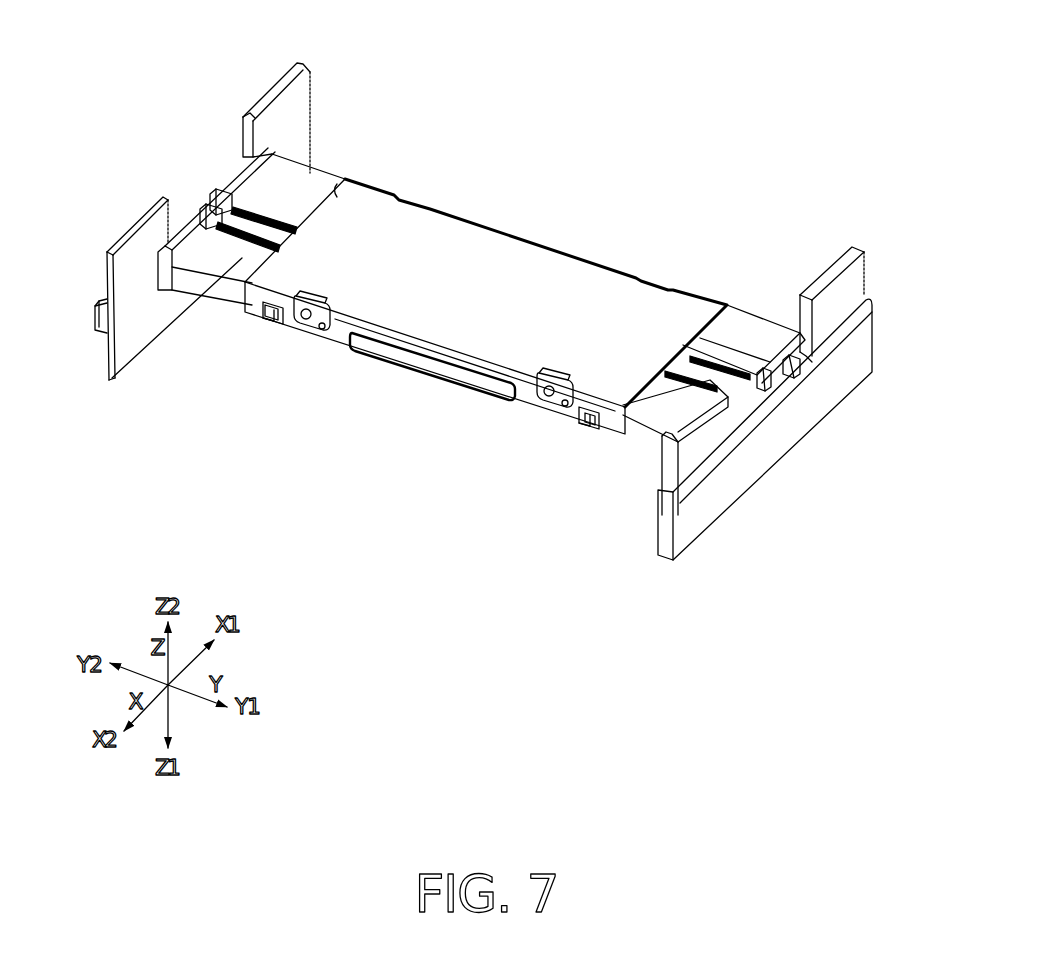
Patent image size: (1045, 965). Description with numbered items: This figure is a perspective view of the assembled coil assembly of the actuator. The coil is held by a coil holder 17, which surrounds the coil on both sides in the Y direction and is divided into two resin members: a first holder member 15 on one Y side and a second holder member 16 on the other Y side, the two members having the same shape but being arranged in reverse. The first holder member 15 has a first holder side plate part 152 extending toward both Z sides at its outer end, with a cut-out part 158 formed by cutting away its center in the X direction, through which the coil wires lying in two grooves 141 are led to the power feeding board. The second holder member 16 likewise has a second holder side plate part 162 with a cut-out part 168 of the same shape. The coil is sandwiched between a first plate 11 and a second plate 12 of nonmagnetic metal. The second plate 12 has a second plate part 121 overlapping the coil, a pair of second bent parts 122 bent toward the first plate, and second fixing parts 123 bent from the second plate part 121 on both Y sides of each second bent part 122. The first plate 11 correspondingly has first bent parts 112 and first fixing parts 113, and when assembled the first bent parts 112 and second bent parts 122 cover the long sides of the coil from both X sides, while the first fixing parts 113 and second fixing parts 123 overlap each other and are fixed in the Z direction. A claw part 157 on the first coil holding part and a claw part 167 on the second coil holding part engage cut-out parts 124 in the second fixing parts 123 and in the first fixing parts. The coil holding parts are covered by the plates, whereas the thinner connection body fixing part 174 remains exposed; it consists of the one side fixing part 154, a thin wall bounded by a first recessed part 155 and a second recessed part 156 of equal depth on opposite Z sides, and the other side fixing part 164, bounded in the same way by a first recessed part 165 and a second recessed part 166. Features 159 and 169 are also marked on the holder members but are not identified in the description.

The first plate 11 is at (488, 332).
The second plate 12 is at (486, 326).
The first bent parts 112 is at (437, 370).
The first fixing parts 113 is at (310, 318).
The second plate part 121 is at (512, 280).
The second bent parts 122 is at (460, 363).
The second fixing parts 123 is at (333, 333).
The cut-out parts 124 is at (278, 321).
The grooves 141 is at (222, 225).
The first holder member 15 is at (761, 427).
The first holder side plate part 152 is at (857, 280).
The one side fixing part 154 is at (753, 333).
The first recessed part 155 is at (733, 322).
The second recessed part 156 is at (635, 435).
The claw part 157 is at (588, 424).
The cut-out part 158 is at (801, 292).
The leg portion 159 is at (872, 310).
The second holder member 16 is at (431, 231).
The second holder side plate part 162 is at (299, 80).
The other side fixing part 164 is at (282, 183).
The first recessed part 165 is at (312, 188).
The second recessed part 166 is at (208, 292).
The claw part 167 is at (263, 317).
The cut-out part 168 is at (245, 127).
The leg portion 169 is at (97, 296).
The coil holder 17 is at (488, 332).
The connection body fixing part 174 is at (552, 229).